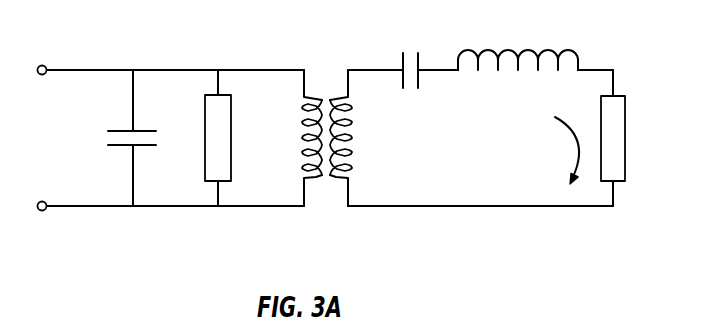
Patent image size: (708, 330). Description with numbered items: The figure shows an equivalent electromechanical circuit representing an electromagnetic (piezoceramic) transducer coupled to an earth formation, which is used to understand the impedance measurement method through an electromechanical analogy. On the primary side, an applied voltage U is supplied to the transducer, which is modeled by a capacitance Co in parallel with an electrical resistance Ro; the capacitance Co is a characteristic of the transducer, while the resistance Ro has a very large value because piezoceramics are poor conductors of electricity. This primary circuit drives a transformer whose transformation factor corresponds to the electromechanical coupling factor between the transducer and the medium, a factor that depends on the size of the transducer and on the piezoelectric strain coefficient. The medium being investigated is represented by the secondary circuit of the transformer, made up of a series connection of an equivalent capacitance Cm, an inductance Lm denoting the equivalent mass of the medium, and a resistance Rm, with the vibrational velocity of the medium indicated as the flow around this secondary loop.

The applied voltage U is at (32, 138).
The capacitance Co is at (118, 138).
The electrical resistance Ro is at (236, 138).
The equivalent capacitance Cm is at (411, 87).
The inductance Lm is at (518, 77).
The resistance Rm is at (639, 138).